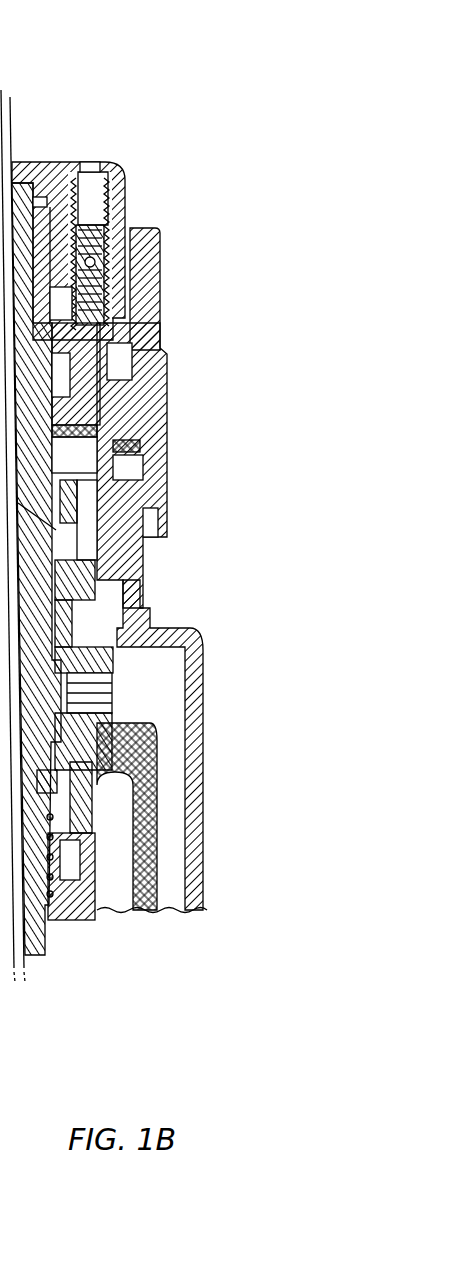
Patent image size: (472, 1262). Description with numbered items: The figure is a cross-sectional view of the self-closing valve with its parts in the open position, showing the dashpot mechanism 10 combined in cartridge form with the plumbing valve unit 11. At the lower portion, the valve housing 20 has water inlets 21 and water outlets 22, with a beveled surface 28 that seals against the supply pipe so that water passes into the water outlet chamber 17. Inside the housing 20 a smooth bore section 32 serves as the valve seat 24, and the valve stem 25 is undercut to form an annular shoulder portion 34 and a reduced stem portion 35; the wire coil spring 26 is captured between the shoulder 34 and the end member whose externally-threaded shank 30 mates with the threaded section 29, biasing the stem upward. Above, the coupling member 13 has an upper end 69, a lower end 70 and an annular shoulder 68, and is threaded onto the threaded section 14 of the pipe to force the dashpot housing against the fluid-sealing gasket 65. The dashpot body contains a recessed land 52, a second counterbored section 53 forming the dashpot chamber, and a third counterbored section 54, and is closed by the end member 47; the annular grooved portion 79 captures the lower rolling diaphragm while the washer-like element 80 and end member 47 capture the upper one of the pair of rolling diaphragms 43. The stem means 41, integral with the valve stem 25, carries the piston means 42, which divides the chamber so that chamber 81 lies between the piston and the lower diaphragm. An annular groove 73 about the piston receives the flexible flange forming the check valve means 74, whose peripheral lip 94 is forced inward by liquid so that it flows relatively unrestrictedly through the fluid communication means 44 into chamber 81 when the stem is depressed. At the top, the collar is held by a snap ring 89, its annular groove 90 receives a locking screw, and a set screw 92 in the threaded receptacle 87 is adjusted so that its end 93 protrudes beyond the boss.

The dashpot mechanism 10 is at (207, 298).
The plumbing valve unit 11 is at (212, 652).
The coupling member 13 is at (167, 372).
The threaded section 14 is at (130, 515).
The water outlet chamber 17 is at (173, 902).
The valve housing 20 is at (115, 680).
The water inlets 21 is at (97, 860).
The water outlets 22 is at (100, 735).
The valve seat 24 is at (110, 760).
The valve stem 25 is at (105, 707).
The wire coil spring 26 is at (62, 842).
The beveled surface 28 is at (100, 805).
The threaded section 29 is at (70, 903).
The externally-threaded shank 30 is at (100, 883).
The smooth bore section 32 is at (90, 785).
The annular shoulder portion 34 is at (63, 810).
The stem portion of reduced diameter 35 is at (47, 937).
The stem means 41 is at (20, 195).
The piston means 42 is at (167, 482).
The rolling diaphragms 43 is at (133, 395).
The fluid communication means 44 is at (37, 535).
The end member 47 is at (163, 352).
The recessed land 52 is at (143, 603).
The second counterbored section 53 is at (143, 583).
The third counterbored section 54 is at (170, 423).
The fluid-sealing gasket 65 is at (120, 462).
The annular shoulder 68 is at (110, 400).
The upper end 69 is at (168, 226).
The lower end 70 is at (158, 525).
The annular groove 73 is at (61, 490).
The check valve means 74 is at (143, 543).
The annular grooved portion 79 is at (63, 668).
The washer-like element 80 is at (167, 447).
The chamber 81 is at (76, 441).
The threaded receptacle 87 is at (112, 163).
The snap ring 89 is at (60, 200).
The annular groove 90 is at (43, 232).
The set screw 92 is at (125, 205).
The end of set screw 93 is at (117, 330).
The peripheral lip 94 is at (112, 500).